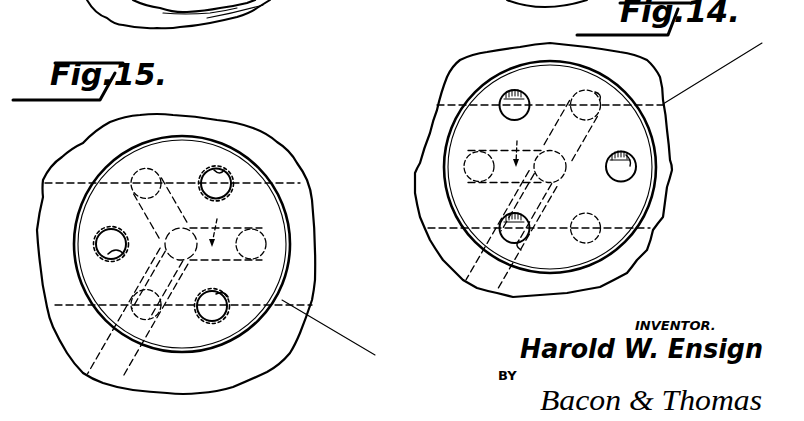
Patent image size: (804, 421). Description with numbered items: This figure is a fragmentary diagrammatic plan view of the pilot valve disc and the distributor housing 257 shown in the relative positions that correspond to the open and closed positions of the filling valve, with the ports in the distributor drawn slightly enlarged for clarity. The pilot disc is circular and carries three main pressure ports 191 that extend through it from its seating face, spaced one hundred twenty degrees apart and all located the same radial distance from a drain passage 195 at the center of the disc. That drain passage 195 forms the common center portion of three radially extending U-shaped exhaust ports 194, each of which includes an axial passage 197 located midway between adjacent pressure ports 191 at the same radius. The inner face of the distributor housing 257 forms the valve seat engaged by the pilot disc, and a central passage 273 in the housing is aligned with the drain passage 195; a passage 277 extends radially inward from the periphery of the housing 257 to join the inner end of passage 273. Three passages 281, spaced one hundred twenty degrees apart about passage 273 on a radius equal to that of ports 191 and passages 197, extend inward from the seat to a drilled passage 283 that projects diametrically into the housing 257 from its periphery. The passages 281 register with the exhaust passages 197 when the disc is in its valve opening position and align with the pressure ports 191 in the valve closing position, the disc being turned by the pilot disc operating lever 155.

In FIG. 15, the pilot disc operating lever 155 is at (328, 328).
In FIG. 14, the pilot disc operating lever 155 is at (693, 80).
In FIG. 15, the main pressure ports 191 is at (213, 168).
In FIG. 14, the main pressure ports 191 is at (515, 97).
In FIG. 15, the U-shaped exhaust ports 194 is at (218, 224).
In FIG. 14, the U-shaped exhaust ports 194 is at (515, 146).
In FIG. 15, the drain passage 195 is at (187, 262).
In FIG. 14, the drain passage 195 is at (568, 177).
In FIG. 15, the axial passages 197 is at (150, 168).
In FIG. 14, the axial passages 197 is at (585, 90).
In FIG. 15, the distributor housing 257 is at (82, 142).
In FIG. 14, the distributor housing 257 is at (467, 59).
In FIG. 15, the passage 273 is at (137, 194).
In FIG. 14, the passage 273 is at (580, 158).
In FIG. 15, the passage 277 is at (131, 363).
In FIG. 14, the passage 277 is at (480, 294).
In FIG. 15, the passages 281 is at (230, 167).
In FIG. 14, the passages 281 is at (600, 93).
In FIG. 15, the drilled passage 283 is at (58, 180).
In FIG. 14, the drilled passage 283 is at (440, 110).